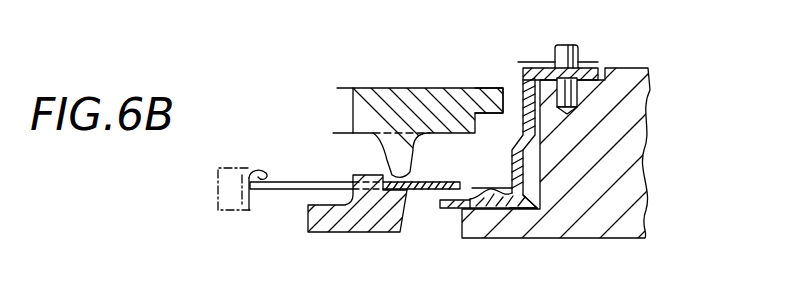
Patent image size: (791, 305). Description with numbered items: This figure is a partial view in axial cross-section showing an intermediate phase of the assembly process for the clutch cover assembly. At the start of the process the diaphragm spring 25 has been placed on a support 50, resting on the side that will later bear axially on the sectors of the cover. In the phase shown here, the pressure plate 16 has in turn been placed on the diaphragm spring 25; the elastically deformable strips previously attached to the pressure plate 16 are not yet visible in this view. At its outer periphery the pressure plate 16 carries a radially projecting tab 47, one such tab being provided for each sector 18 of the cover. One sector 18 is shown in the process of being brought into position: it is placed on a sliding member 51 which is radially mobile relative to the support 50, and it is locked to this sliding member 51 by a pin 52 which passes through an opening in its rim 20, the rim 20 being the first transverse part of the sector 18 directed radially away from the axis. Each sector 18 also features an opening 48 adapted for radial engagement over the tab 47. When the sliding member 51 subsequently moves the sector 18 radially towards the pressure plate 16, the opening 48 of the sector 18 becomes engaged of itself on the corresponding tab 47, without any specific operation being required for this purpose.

The pressure plate 16 is at (390, 88).
The tab 47 is at (488, 88).
The first transverse part (rim) 20 is at (598, 70).
The sliding member 51 is at (643, 68).
The pin 52 is at (573, 45).
The opening 48 is at (523, 114).
The sector 18 is at (526, 197).
The diaphragm spring 25 is at (427, 190).
The support 50 is at (308, 226).